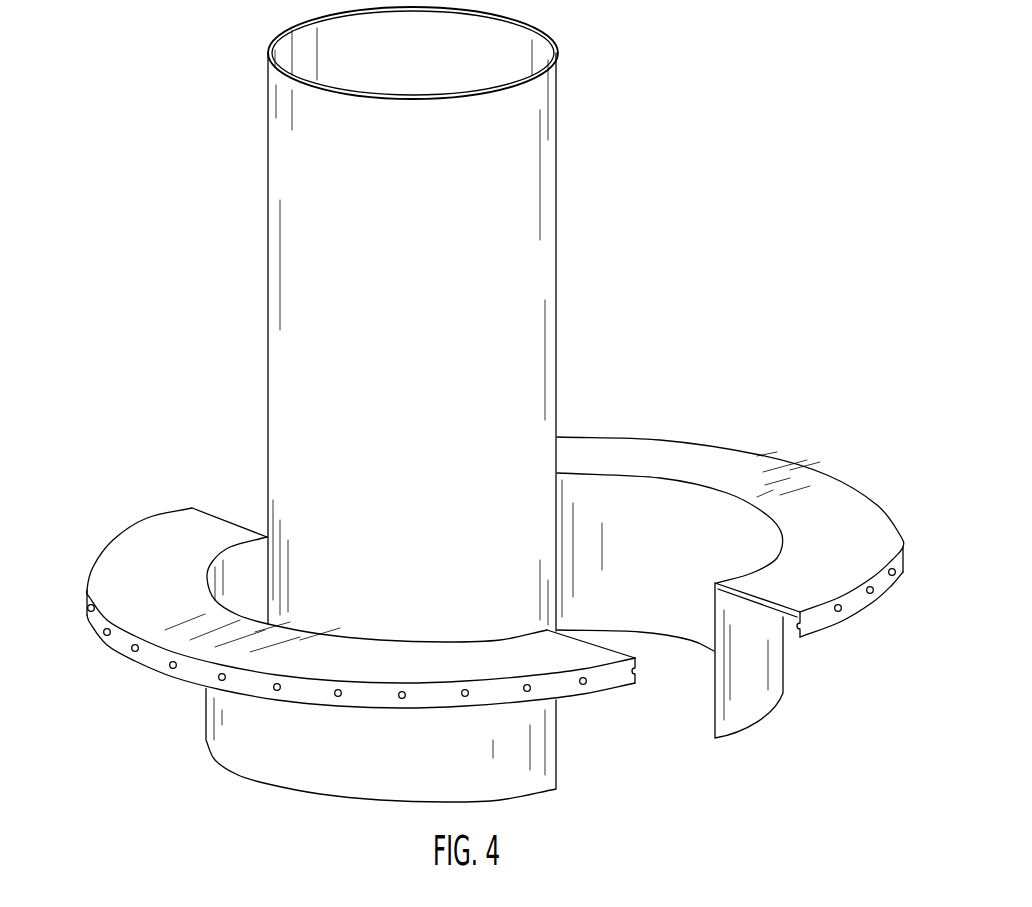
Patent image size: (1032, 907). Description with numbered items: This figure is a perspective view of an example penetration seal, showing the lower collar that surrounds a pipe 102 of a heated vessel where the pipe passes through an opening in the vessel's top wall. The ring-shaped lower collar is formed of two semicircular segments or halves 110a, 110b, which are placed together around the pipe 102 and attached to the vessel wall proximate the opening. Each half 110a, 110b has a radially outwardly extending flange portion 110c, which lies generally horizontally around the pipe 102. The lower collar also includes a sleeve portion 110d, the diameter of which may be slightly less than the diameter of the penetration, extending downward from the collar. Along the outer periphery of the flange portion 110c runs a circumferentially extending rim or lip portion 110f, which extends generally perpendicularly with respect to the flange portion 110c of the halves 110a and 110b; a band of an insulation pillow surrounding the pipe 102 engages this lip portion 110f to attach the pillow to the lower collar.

The pipe 102 is at (543, 202).
The semicircular segment 110a is at (163, 518).
The semicircular segment 110b is at (848, 483).
The flange portion 110c is at (743, 467).
The sleeve portion 110d is at (205, 722).
The lip portion 110f is at (563, 687).